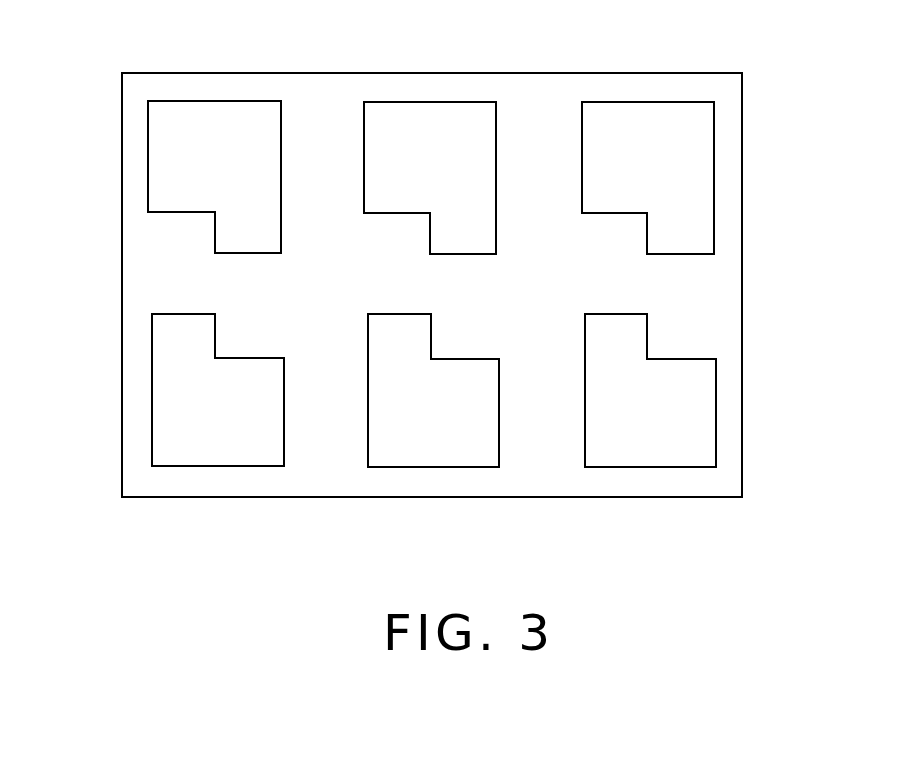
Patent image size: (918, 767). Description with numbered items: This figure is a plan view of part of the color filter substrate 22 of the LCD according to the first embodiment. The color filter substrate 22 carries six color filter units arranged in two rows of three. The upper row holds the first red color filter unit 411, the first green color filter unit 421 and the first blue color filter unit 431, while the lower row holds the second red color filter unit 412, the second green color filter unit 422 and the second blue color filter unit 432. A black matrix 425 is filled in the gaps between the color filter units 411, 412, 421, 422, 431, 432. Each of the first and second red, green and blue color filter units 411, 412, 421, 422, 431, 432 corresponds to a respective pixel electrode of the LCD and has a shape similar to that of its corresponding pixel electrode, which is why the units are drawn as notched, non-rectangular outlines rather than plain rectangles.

The color filter substrate 22 is at (469, 41).
The black matrix 425 is at (305, 105).
The first red color filter unit 411 is at (148, 178).
The second red color filter unit 412 is at (152, 388).
The first green color filter unit 421 is at (388, 102).
The second green color filter unit 422 is at (462, 467).
The first blue color filter unit 431 is at (715, 233).
The second blue color filter unit 432 is at (716, 412).